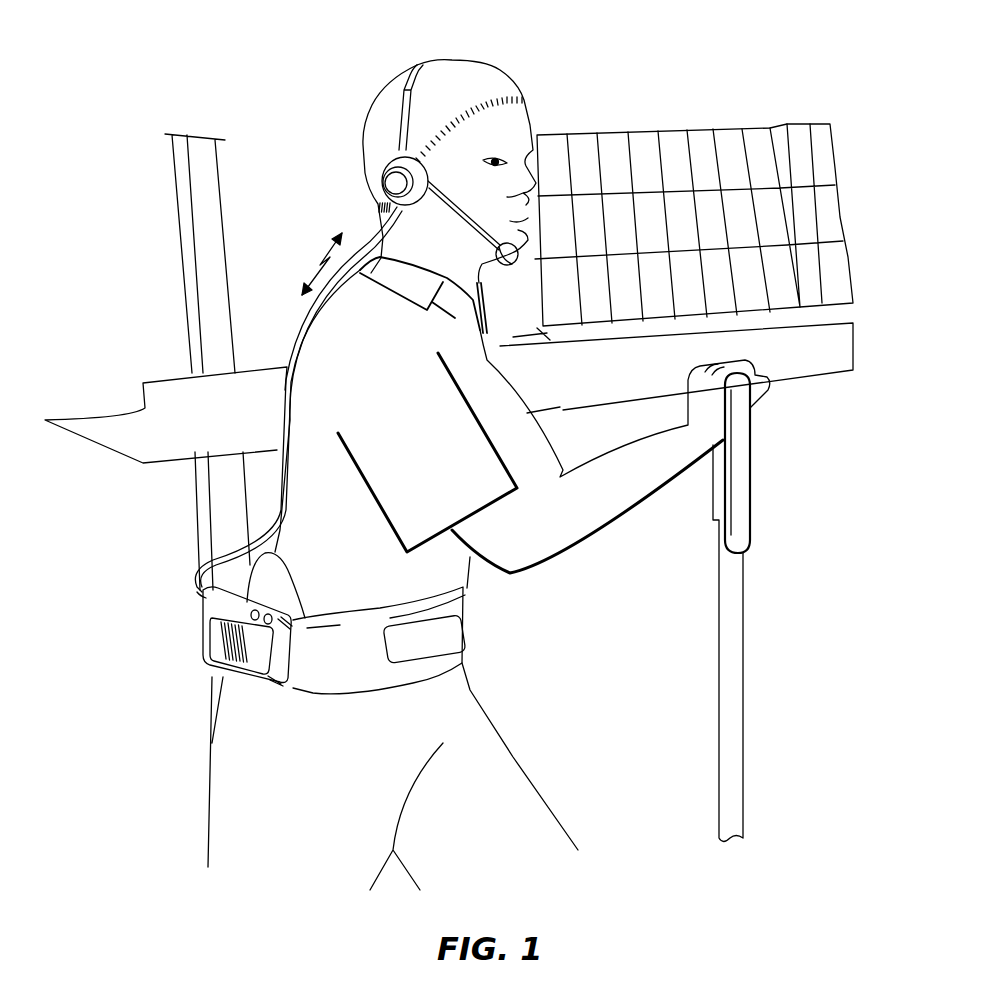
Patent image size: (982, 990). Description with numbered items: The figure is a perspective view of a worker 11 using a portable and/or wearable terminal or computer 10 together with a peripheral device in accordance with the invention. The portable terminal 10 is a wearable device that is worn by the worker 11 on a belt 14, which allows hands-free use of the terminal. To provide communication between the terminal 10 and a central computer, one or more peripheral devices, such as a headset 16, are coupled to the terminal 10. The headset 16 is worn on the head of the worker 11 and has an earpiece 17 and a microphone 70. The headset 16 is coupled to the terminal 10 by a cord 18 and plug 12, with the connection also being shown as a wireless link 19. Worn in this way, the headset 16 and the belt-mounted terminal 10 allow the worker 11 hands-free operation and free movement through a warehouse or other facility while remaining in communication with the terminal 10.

The portable terminal 10 is at (209, 680).
The worker 11 is at (402, 401).
The plug 12 is at (191, 601).
The belt 14 is at (468, 634).
The headset 16 is at (395, 93).
The earpiece 17 is at (383, 168).
The cord 18 is at (282, 413).
The wireless link 19 is at (315, 275).
The microphone 70 is at (494, 253).